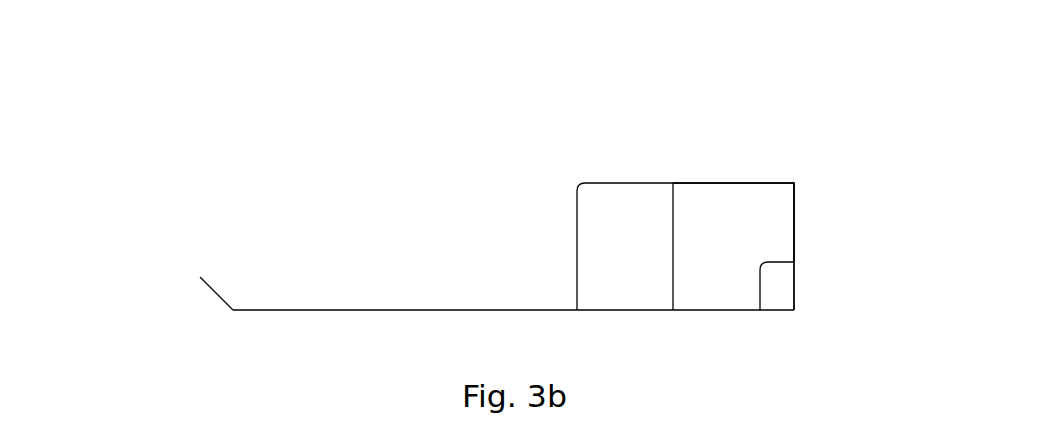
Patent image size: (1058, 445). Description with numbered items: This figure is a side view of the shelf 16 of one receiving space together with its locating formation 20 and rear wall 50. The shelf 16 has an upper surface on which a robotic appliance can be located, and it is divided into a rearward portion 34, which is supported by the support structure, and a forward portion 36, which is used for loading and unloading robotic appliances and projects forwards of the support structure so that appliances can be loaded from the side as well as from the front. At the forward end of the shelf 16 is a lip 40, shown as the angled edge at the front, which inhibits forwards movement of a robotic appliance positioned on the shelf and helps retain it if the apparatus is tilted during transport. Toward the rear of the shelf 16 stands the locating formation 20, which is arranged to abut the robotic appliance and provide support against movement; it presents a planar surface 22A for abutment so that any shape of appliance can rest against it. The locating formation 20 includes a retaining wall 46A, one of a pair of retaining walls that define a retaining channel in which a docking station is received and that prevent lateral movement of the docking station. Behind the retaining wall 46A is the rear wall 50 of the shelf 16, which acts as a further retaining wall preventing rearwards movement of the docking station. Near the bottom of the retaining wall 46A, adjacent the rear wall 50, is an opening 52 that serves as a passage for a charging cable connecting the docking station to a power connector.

The shelf 16 is at (203, 170).
The locating formation 20 is at (668, 182).
The planar surface 22A is at (620, 241).
The rearward portion 34 is at (677, 321).
The forward portion 36 is at (337, 301).
The lip 40 is at (213, 293).
The retaining wall 46A is at (734, 217).
The rear wall 50 is at (794, 232).
The opening 52 is at (772, 288).